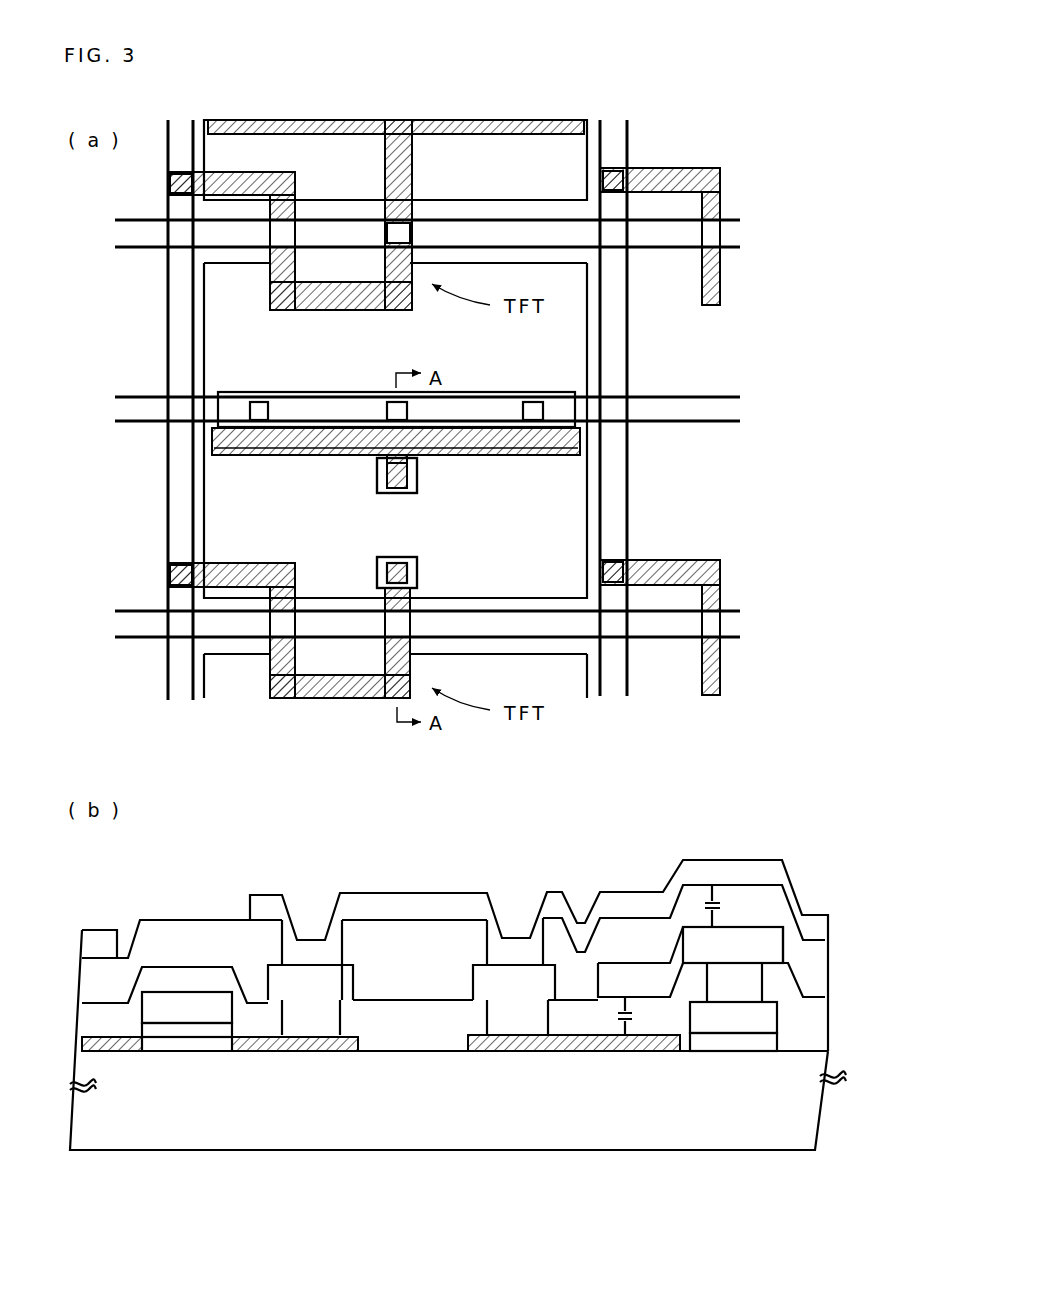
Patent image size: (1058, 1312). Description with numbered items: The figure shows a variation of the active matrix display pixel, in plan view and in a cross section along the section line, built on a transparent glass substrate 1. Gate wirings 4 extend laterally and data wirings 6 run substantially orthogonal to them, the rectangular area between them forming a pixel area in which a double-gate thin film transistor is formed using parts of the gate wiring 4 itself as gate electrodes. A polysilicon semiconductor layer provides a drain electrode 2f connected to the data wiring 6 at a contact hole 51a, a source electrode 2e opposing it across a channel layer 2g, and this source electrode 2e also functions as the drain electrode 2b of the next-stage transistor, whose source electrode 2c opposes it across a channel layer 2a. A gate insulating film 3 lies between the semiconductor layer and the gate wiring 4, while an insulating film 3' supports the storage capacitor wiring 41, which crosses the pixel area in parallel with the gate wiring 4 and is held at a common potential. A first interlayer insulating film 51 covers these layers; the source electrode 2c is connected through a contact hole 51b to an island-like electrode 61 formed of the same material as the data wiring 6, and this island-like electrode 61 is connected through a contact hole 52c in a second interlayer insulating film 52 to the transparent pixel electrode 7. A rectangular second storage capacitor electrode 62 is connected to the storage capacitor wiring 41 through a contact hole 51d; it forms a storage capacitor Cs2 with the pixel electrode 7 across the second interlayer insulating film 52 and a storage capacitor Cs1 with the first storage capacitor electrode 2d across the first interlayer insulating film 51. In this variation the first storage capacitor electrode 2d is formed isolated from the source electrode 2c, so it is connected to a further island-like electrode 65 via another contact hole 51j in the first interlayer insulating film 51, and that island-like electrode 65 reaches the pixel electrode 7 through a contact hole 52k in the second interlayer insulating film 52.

The transparent glass substrate 1 is at (690, 543).
The channel layer 2a is at (410, 620).
The drain electrode 2b is at (410, 668).
The source electrode 2c is at (377, 585).
The first storage capacitor electrode 2d is at (548, 455).
The source electrode 2e is at (310, 698).
The drain electrode 2f is at (237, 563).
The channel layer 2g is at (270, 620).
The gate insulating film 3 is at (187, 1055).
The insulating film 3' is at (733, 1067).
The gate wiring 4 is at (122, 233).
The storage capacitor wiring 41 is at (122, 410).
The first interlayer insulating film 51 is at (82, 1025).
The contact hole 51a is at (167, 570).
The contact hole 51b is at (417, 578).
The contact hole 51d is at (387, 405).
The contact hole 51j is at (377, 475).
The second interlayer insulating film 52 is at (82, 978).
The contact hole 52c is at (310, 948).
The contact hole 52k is at (520, 948).
The data wiring 6 is at (178, 700).
The island-like electrode 61 is at (417, 565).
The second storage capacitor electrode 62 is at (483, 392).
The island-like electrode 65 is at (417, 475).
The pixel electrode 7 is at (603, 338).
The storage capacitor Cs1 is at (647, 1016).
The storage capacitor Cs2 is at (736, 906).